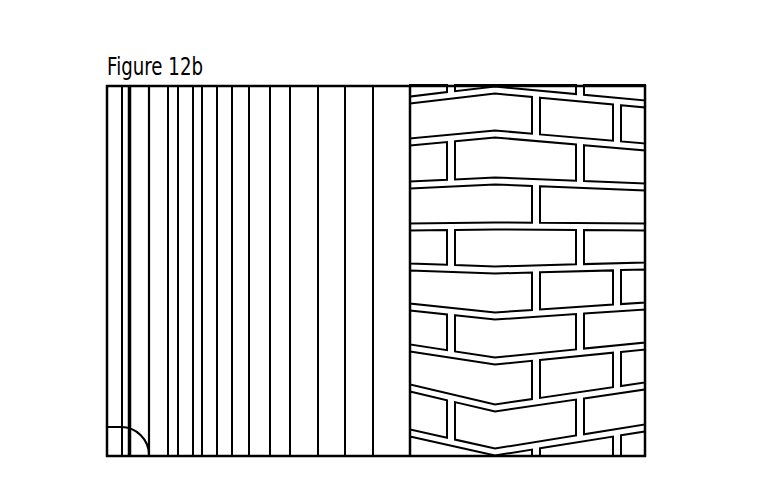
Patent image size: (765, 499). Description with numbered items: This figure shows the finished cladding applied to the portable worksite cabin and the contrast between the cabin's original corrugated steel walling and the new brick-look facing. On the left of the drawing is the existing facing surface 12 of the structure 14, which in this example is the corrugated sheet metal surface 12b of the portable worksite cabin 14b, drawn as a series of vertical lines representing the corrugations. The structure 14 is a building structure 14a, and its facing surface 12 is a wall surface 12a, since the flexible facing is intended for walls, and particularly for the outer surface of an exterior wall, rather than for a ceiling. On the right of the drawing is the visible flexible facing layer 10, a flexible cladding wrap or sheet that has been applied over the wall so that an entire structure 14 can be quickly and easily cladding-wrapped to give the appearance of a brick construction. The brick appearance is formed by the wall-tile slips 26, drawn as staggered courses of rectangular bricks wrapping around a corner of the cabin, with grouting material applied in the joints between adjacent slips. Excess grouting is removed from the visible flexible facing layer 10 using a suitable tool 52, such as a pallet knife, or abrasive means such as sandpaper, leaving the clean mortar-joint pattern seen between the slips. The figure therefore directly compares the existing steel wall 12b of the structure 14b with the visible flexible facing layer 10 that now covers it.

The visible flexible facing layer 10 is at (578, 272).
The facing surface 12 is at (210, 229).
The wall surface 12a is at (318, 87).
The corrugated sheet metal surface 12b is at (231, 112).
The structure 14 is at (91, 271).
The building structure 14a is at (143, 362).
The portable worksite cabin 14b is at (160, 408).
The wall-tile slips 26 is at (592, 286).
The tool 52 is at (597, 389).